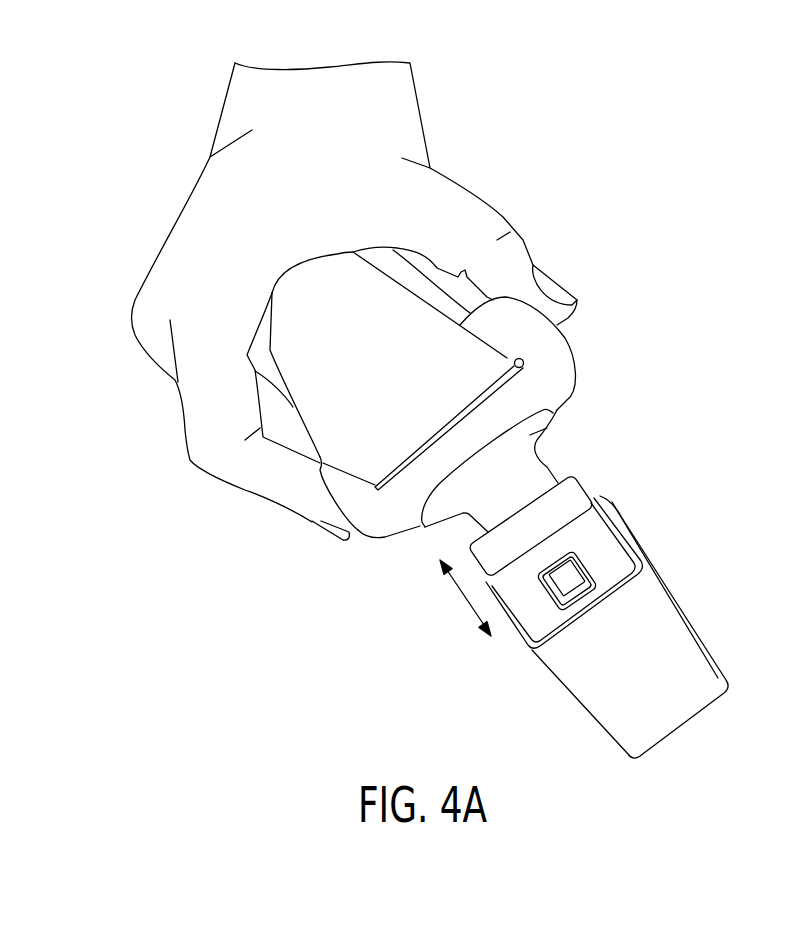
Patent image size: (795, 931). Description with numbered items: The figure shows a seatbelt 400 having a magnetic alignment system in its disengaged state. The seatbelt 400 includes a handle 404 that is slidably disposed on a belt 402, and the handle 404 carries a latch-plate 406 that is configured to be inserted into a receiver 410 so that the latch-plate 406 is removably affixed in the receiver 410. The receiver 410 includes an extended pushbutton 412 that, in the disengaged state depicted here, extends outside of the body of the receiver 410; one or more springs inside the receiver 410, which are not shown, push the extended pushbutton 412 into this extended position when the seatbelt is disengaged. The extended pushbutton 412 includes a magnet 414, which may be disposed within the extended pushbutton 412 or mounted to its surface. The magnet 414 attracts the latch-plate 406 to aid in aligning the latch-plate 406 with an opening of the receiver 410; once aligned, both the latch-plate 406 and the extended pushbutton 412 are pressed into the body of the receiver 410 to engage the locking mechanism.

The seatbelt 400 is at (680, 130).
The belt 402 is at (409, 335).
The handle 404 is at (550, 367).
The latch-plate 406 is at (562, 427).
The receiver 410 is at (589, 616).
The extended pushbutton 412 is at (477, 568).
The magnet 414 is at (567, 580).